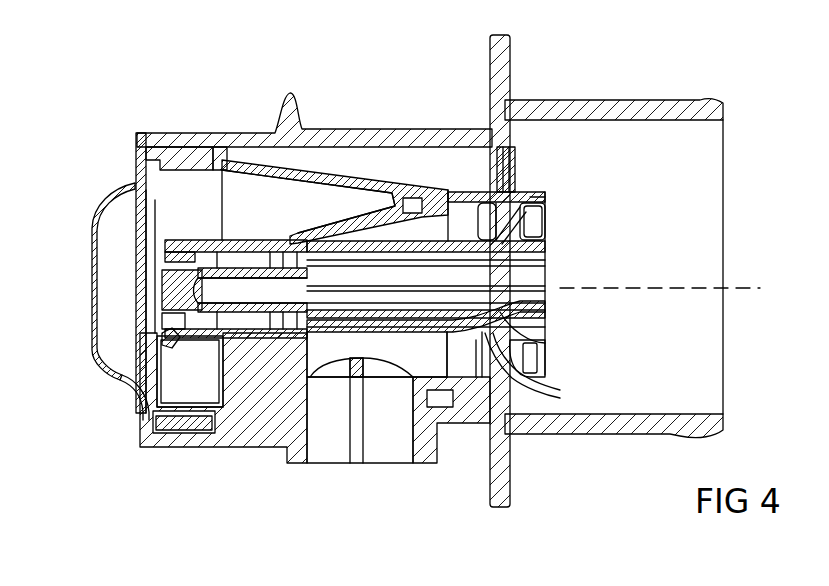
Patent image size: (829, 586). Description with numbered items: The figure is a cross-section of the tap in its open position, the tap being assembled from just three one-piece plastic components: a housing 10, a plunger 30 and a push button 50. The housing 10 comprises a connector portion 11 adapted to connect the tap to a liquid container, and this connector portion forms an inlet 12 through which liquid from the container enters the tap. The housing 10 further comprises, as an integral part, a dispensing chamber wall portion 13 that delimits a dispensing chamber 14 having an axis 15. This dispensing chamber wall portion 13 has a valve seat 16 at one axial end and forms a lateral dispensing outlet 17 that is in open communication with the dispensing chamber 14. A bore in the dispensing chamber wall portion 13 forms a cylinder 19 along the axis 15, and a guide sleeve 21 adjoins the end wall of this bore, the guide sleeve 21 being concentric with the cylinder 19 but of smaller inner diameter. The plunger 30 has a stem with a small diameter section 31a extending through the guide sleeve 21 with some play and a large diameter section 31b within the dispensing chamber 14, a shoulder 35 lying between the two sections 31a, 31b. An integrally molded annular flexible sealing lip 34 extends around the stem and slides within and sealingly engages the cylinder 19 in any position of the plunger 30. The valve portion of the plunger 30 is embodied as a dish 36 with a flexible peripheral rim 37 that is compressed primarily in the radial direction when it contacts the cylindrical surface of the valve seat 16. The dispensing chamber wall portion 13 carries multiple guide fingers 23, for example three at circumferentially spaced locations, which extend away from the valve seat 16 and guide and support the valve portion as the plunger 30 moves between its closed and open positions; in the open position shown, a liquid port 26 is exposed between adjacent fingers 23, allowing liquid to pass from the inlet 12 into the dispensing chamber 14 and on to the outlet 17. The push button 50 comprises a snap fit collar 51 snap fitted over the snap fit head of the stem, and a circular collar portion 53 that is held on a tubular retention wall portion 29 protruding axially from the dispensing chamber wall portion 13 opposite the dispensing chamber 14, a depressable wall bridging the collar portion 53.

The housing 10 is at (363, 143).
The connector portion 11 is at (603, 112).
The inlet 12 is at (759, 200).
The dispensing chamber wall portion 13 is at (367, 217).
The dispensing chamber 14 is at (388, 342).
The axis 15 is at (760, 284).
The valve seat 16 is at (460, 380).
The lateral dispensing outlet 17 is at (388, 472).
The cylinder 19 is at (250, 333).
The guide sleeve 21 is at (223, 257).
The guide fingers 23 is at (530, 193).
The liquid port 26 is at (495, 218).
The tubular retention wall portion 29 is at (215, 410).
The plunger 30 is at (566, 264).
The small diameter section 31a is at (260, 273).
The large diameter section 31b is at (490, 305).
The annular flexible sealing lip 34 is at (287, 316).
The shoulder 35 is at (296, 267).
The dish 36 is at (500, 380).
The flexible peripheral rim 37 is at (540, 357).
The push button 50 is at (137, 390).
The snap fit collar 51 is at (175, 345).
The collar portion 53 is at (175, 418).